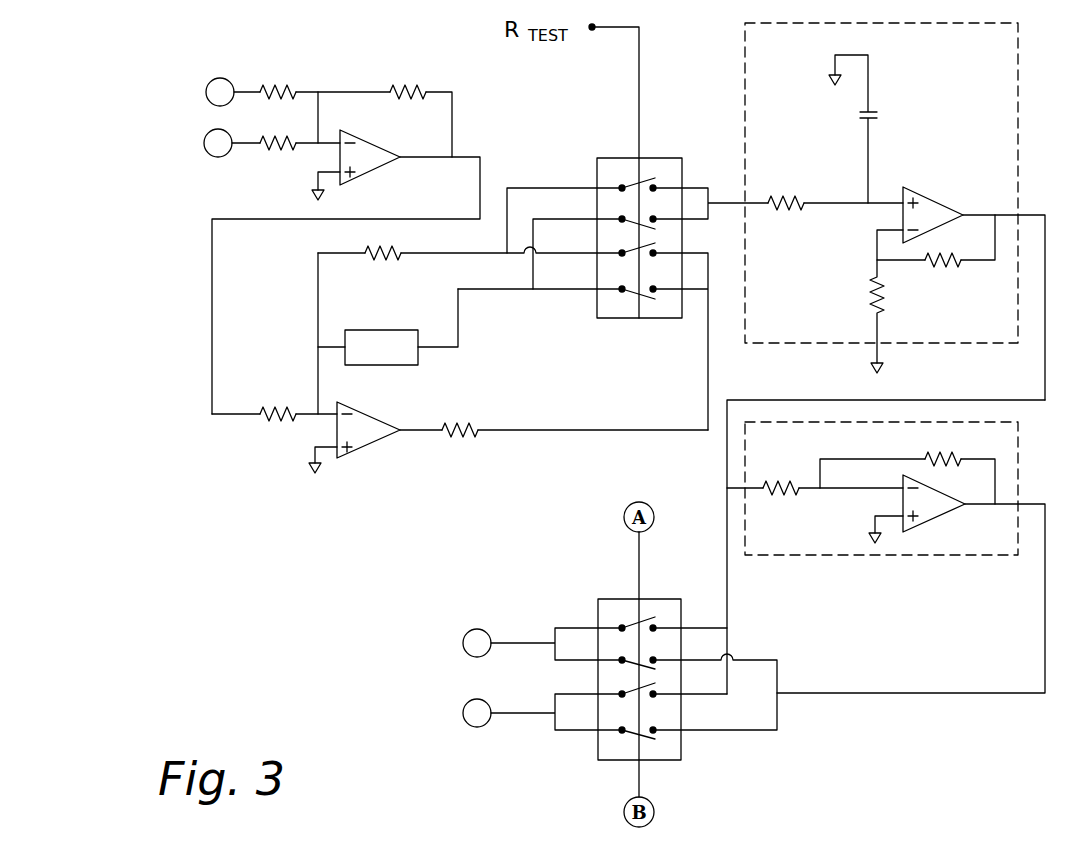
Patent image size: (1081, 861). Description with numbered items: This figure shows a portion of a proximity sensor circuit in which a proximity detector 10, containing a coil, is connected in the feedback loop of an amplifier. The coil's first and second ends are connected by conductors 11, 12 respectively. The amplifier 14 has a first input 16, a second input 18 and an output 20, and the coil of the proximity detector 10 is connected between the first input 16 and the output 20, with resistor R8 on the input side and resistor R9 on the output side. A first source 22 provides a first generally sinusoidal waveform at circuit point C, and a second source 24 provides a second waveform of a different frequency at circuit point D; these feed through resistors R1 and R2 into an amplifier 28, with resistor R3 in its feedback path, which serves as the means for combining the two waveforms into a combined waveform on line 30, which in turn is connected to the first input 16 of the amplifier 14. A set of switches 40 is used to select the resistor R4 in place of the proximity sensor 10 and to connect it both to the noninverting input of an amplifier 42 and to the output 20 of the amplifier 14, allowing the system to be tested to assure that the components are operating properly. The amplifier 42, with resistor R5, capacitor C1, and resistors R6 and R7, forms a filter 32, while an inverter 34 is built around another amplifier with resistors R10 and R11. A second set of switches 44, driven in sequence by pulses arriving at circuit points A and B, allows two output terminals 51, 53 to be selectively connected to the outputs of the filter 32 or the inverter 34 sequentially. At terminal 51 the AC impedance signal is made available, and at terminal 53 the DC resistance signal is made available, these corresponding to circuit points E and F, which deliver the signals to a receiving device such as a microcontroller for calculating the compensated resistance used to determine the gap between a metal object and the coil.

The first source 22 is at (212, 80).
The second source 24 is at (206, 155).
The resistor R1 is at (280, 84).
The resistor R2 is at (274, 156).
The resistor R3 is at (406, 84).
The amplifier 28 is at (372, 172).
The line 30 is at (470, 156).
The set of switches 40 is at (628, 320).
The resistor R4 is at (385, 260).
The proximity detector 10 is at (420, 360).
The conductor 11 is at (334, 345).
The conductor 12 is at (432, 345).
The amplifier 14 is at (370, 446).
The first input 16 is at (330, 412).
The second input 18 is at (327, 446).
The output 20 is at (408, 430).
The resistor R8 is at (275, 420).
The resistor R9 is at (462, 440).
The filter 32 is at (745, 70).
The resistor R5 is at (792, 198).
The capacitor C1 is at (878, 110).
The amplifier 42 is at (936, 200).
The resistor R6 is at (946, 282).
The resistor R7 is at (870, 298).
The inverter 34 is at (803, 558).
The resistor R10 is at (772, 482).
The resistor R11 is at (940, 454).
The set of switches 44 is at (596, 745).
The output terminal 51 is at (476, 628).
The output terminal 53 is at (470, 728).